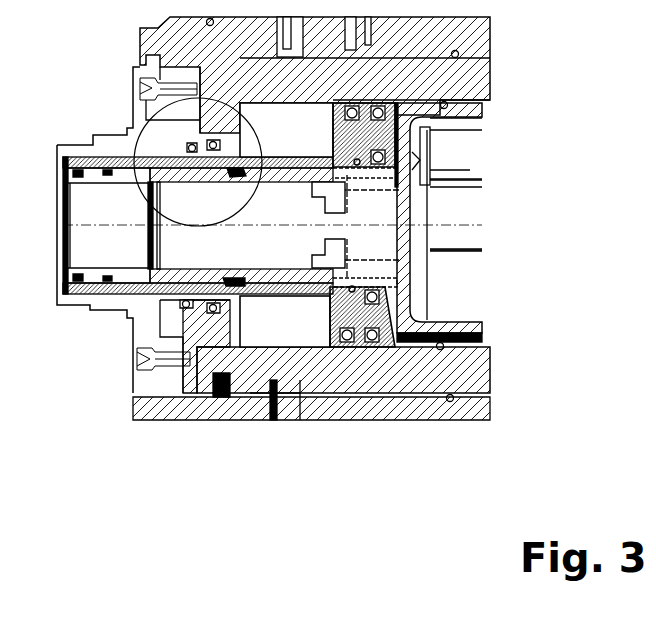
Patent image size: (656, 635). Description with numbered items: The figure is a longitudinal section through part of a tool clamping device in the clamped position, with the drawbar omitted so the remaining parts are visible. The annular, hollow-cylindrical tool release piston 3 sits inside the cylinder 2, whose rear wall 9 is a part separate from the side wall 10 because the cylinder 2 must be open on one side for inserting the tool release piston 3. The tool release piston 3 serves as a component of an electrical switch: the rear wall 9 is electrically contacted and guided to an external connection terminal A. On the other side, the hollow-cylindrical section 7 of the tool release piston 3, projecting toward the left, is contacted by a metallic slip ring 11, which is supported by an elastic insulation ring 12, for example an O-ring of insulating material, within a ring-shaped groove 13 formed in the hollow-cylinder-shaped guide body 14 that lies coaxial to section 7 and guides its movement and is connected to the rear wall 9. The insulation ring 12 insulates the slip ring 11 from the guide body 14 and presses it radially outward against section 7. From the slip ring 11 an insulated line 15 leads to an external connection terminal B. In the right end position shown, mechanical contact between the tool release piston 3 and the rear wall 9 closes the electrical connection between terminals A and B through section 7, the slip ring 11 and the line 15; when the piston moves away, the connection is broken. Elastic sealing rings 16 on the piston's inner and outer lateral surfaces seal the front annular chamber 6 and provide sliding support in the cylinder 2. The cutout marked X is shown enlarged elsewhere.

The cylinder 2 is at (473, 372).
The tool release piston 3 is at (333, 370).
The annular chamber 6 is at (252, 375).
The hollow-cylindrical section 7 is at (112, 287).
The rear wall 9 is at (395, 299).
The side wall 10 is at (283, 397).
The slip ring 11 is at (255, 153).
The insulation ring 12 is at (240, 178).
The ring-shaped groove 13 is at (228, 175).
The guide body 14 is at (122, 173).
The insulated line 15 is at (350, 248).
The sealing rings 16 is at (208, 372).
The connection terminal A is at (482, 110).
The connection terminal B is at (330, 216).
The cutout X is at (140, 128).